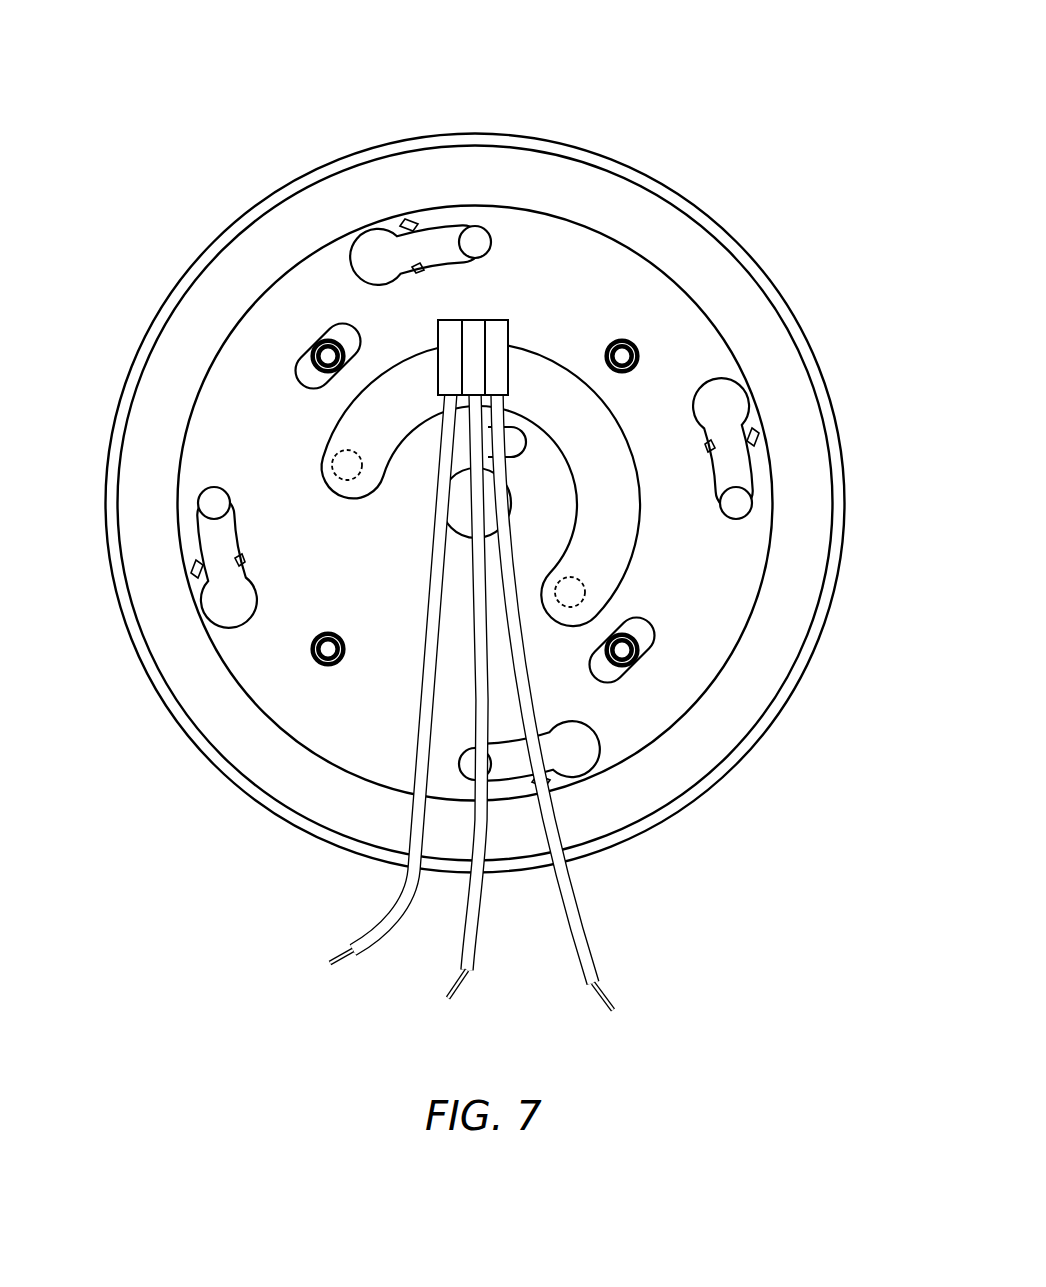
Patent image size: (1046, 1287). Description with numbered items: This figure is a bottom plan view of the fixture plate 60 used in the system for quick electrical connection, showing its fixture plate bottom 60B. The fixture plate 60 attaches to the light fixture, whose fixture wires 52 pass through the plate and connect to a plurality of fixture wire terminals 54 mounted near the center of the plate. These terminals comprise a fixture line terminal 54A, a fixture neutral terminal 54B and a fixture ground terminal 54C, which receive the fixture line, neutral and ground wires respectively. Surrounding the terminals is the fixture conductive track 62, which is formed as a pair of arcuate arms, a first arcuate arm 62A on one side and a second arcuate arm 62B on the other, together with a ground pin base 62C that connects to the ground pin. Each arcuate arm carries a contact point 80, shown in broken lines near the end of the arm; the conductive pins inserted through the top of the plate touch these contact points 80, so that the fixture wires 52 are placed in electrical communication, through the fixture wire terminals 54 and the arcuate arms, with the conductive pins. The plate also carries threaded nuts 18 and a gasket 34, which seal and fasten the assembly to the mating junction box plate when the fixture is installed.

The threaded nut 18 is at (315, 662).
The gasket 34 is at (795, 402).
The fixture wires 52 is at (606, 923).
The fixture wire terminals 54 is at (495, 215).
The fixture line terminal 54A is at (453, 330).
The fixture neutral terminal 54B is at (497, 330).
The fixture ground terminal 54C is at (475, 330).
The fixture plate 60 is at (124, 291).
The fixture plate bottom 60B is at (778, 786).
The fixture conductive track 62 is at (595, 357).
The first arcuate arm 62A is at (398, 370).
The second arcuate arm 62B is at (605, 540).
The ground pin base 62C is at (520, 433).
The contact point 80 is at (332, 467).